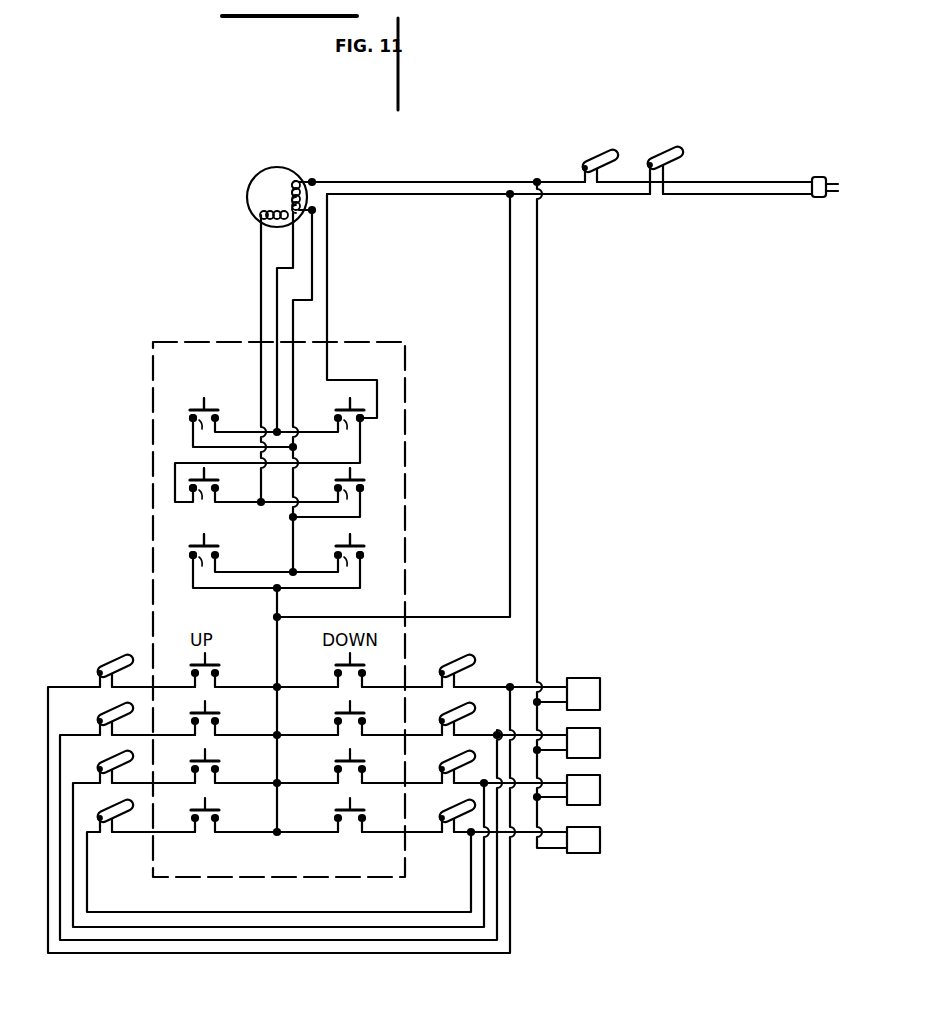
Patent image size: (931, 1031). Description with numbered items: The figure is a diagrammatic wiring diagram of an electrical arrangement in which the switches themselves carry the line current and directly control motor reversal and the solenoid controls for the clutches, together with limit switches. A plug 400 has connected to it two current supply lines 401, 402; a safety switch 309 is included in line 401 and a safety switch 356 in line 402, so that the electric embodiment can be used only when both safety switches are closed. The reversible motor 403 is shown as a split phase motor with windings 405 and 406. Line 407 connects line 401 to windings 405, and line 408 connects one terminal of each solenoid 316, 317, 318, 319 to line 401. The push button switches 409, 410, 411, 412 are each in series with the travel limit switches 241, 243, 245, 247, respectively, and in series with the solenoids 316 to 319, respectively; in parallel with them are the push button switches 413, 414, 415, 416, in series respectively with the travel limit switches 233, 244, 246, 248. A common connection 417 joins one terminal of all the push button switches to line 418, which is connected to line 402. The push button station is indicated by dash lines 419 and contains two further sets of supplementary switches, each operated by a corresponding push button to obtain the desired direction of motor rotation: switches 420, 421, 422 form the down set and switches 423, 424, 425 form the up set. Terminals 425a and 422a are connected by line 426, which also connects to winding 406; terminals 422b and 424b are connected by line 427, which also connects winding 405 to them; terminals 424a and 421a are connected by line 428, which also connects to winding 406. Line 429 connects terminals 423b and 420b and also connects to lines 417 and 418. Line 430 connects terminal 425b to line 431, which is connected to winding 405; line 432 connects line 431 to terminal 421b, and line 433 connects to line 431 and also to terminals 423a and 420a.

The plug 400 is at (815, 177).
The current supply line 401 is at (718, 182).
The current supply line 402 is at (759, 197).
The reversible motor 403 is at (281, 168).
The motor winding 405 is at (302, 180).
The motor winding 406 is at (250, 206).
The line 407 is at (421, 182).
The line 408 is at (539, 400).
The safety switch 309 is at (588, 163).
The safety switch 356 is at (655, 160).
The line 418 is at (508, 368).
The push button station 419 is at (150, 355).
The line 426 is at (279, 295).
The line 427 is at (333, 220).
The line 428 is at (259, 283).
The line 429 is at (306, 589).
The line 430 is at (193, 437).
The line 431 is at (314, 246).
The line 432 is at (362, 520).
The line 433 is at (242, 577).
The common connection 417 is at (277, 650).
The supplementary down switch 420 is at (363, 567).
The terminal 420a is at (336, 563).
The terminal 420b is at (363, 557).
The supplementary down switch 421 is at (363, 497).
The terminal 421a is at (336, 492).
The terminal 421b is at (363, 490).
The supplementary down switch 422 is at (364, 436).
The terminal 422a is at (337, 414).
The terminal 422b is at (363, 424).
The supplementary up switch 423 is at (190, 568).
The terminal 423a is at (218, 558).
The terminal 423b is at (190, 556).
The supplementary up switch 424 is at (200, 500).
The terminal 424a is at (218, 492).
The terminal 424b is at (190, 488).
The supplementary up switch 425 is at (190, 424).
The terminal 425a is at (225, 404).
The terminal 425b is at (192, 417).
The push button switch 409 is at (338, 820).
The push button switch 410 is at (338, 771).
The push button switch 411 is at (338, 723).
The push button switch 412 is at (338, 675).
The push button switch 413 is at (219, 813).
The push button switch 414 is at (219, 764).
The push button switch 415 is at (219, 716).
The push button switch 416 is at (219, 668).
The travel limit switch 233 is at (110, 805).
The travel limit switch 241 is at (443, 815).
The travel limit switch 243 is at (443, 765).
The travel limit switch 244 is at (105, 752).
The travel limit switch 245 is at (443, 716).
The travel limit switch 246 is at (100, 716).
The travel limit switch 247 is at (445, 667).
The travel limit switch 248 is at (98, 668).
The solenoid 316 is at (593, 840).
The solenoid 317 is at (593, 788).
The solenoid 318 is at (593, 738).
The solenoid 319 is at (594, 688).